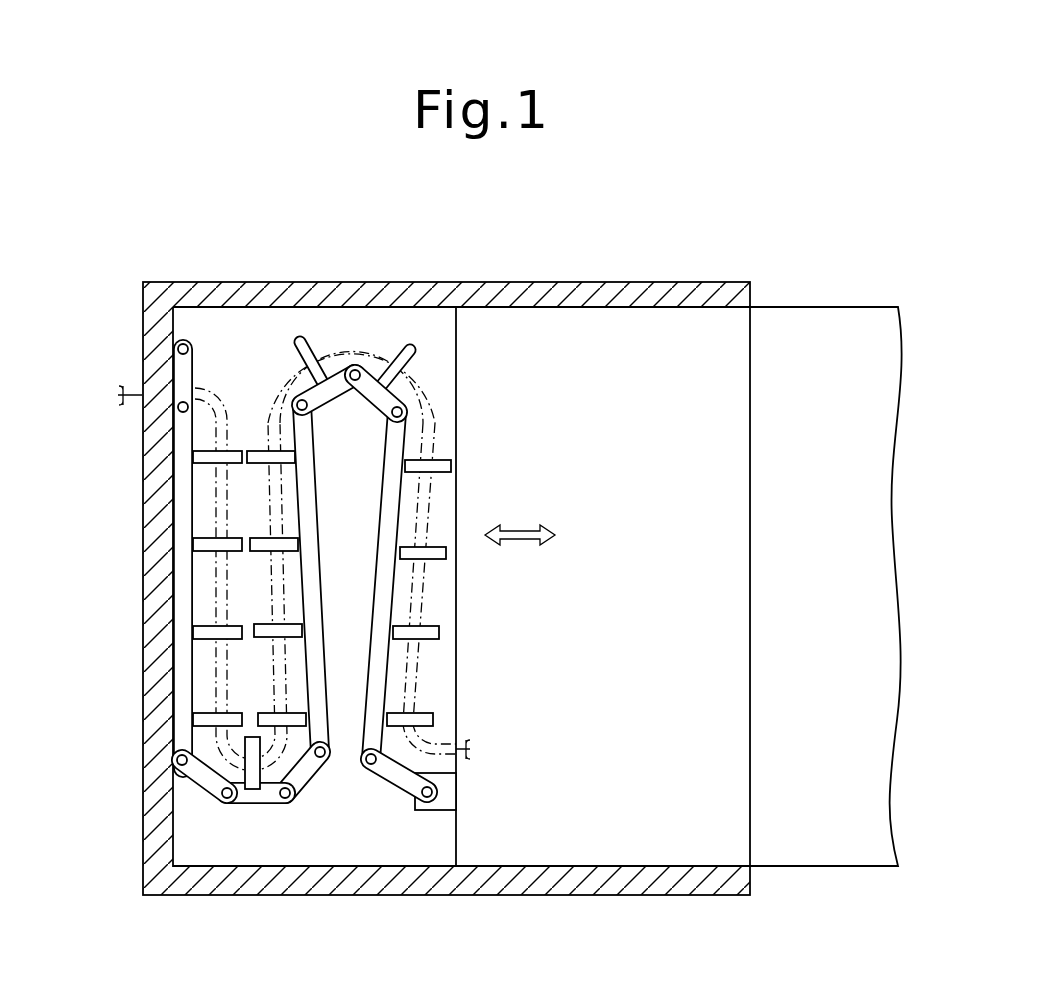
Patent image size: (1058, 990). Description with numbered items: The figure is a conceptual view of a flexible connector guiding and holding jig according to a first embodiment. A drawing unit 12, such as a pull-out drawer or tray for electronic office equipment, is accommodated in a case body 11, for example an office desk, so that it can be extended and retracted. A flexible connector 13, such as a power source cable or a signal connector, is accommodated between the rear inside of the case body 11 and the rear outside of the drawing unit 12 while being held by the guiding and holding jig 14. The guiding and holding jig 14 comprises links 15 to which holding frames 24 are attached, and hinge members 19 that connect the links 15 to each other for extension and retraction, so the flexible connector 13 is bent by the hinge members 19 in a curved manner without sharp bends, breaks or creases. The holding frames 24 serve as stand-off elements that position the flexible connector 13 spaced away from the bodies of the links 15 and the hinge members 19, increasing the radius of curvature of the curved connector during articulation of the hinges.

The case body 11 is at (515, 292).
The drawing unit 12 is at (808, 325).
The flexible connector 13 is at (268, 382).
The guiding and holding jig 14 is at (377, 338).
The links 15 is at (178, 538).
The hinge members 19 is at (180, 375).
The holding frames 24 is at (245, 738).